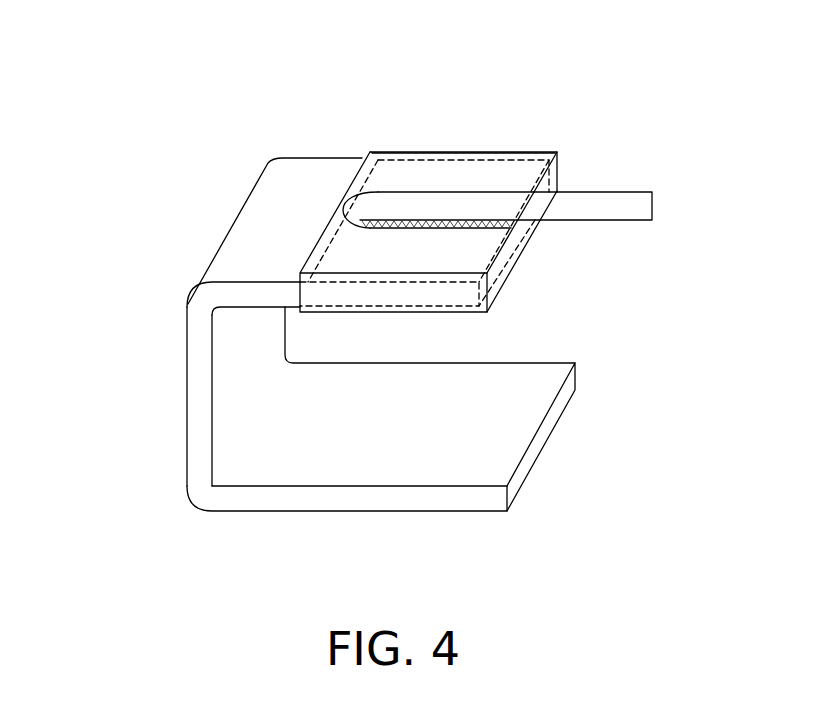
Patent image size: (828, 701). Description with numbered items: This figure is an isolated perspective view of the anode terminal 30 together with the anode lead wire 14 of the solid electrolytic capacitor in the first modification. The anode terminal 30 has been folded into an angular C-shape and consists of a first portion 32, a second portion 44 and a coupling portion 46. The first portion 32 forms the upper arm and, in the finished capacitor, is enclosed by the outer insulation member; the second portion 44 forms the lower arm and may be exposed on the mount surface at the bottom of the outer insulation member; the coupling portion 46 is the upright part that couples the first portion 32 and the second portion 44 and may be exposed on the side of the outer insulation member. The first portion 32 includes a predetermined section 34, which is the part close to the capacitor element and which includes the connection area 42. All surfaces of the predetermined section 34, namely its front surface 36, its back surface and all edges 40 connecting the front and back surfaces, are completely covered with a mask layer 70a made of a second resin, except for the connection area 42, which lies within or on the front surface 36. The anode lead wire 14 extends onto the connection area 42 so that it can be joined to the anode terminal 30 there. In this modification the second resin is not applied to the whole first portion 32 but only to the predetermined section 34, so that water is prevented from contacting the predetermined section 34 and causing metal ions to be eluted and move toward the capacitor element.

The anode lead wire 14 is at (499, 203).
The anode terminal 30 is at (187, 355).
The first portion 32 is at (263, 292).
The predetermined section 34 is at (378, 257).
The front surface 36 is at (418, 170).
The edges 40 is at (445, 297).
The connection area 42 is at (463, 226).
The second portion 44 is at (289, 495).
The coupling portion 46 is at (197, 437).
The mask layer 70a is at (380, 173).